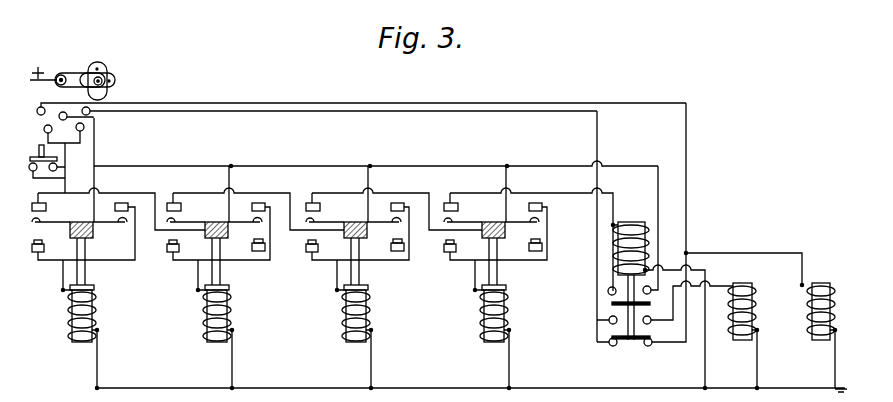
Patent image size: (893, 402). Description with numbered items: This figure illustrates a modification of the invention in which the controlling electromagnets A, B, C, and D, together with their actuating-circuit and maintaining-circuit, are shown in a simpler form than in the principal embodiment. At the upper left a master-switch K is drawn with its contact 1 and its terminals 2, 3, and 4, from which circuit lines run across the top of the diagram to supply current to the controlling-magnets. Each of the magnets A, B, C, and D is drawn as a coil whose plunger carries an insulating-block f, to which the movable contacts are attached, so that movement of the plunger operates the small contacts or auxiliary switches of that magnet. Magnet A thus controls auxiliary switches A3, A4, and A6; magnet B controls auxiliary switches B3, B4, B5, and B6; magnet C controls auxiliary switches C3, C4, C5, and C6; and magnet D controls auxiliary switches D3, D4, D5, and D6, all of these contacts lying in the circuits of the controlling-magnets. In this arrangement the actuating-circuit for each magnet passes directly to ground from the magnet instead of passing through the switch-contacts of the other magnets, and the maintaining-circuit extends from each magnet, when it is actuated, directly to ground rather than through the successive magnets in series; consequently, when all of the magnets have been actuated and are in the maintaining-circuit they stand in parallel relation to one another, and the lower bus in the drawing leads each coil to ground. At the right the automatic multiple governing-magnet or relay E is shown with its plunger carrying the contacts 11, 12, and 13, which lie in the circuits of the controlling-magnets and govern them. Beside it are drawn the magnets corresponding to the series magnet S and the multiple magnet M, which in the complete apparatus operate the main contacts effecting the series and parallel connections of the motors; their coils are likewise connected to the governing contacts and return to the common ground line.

The master-switch K is at (85, 74).
The master-switch contact 1 is at (47, 161).
The master-switch terminal 2 is at (64, 158).
The master-switch terminal 3 is at (76, 111).
The master-switch terminal 4 is at (37, 119).
The electromagnet A is at (96, 309).
The auxiliary switch of magnet A A3 is at (44, 249).
The auxiliary switch of magnet A A4 is at (46, 207).
The auxiliary switch of magnet A A6 is at (86, 229).
The insulating-block f is at (93, 231).
The electromagnet B is at (221, 324).
The auxiliary switch of magnet B B3 is at (181, 248).
The auxiliary switch of magnet B B4 is at (183, 203).
The auxiliary switch of magnet B B5 is at (250, 249).
The auxiliary switch of magnet B B6 is at (221, 229).
The electromagnet C is at (361, 324).
The auxiliary switch of magnet C C3 is at (320, 248).
The auxiliary switch of magnet C C4 is at (322, 203).
The auxiliary switch of magnet C C5 is at (388, 249).
The auxiliary switch of magnet C C6 is at (360, 229).
The electromagnet D is at (499, 324).
The auxiliary switch of magnet D D3 is at (459, 248).
The auxiliary switch of magnet D D4 is at (460, 203).
The auxiliary switch of magnet D D5 is at (526, 249).
The auxiliary switch of magnet D D6 is at (498, 229).
The multiple governing-magnet E is at (658, 294).
The contact of governing-magnet 11 is at (641, 231).
The contact of governing-magnet 12 is at (665, 302).
The contact of governing-magnet 13 is at (633, 230).
The multiple magnet M is at (754, 305).
The series magnet S is at (812, 318).